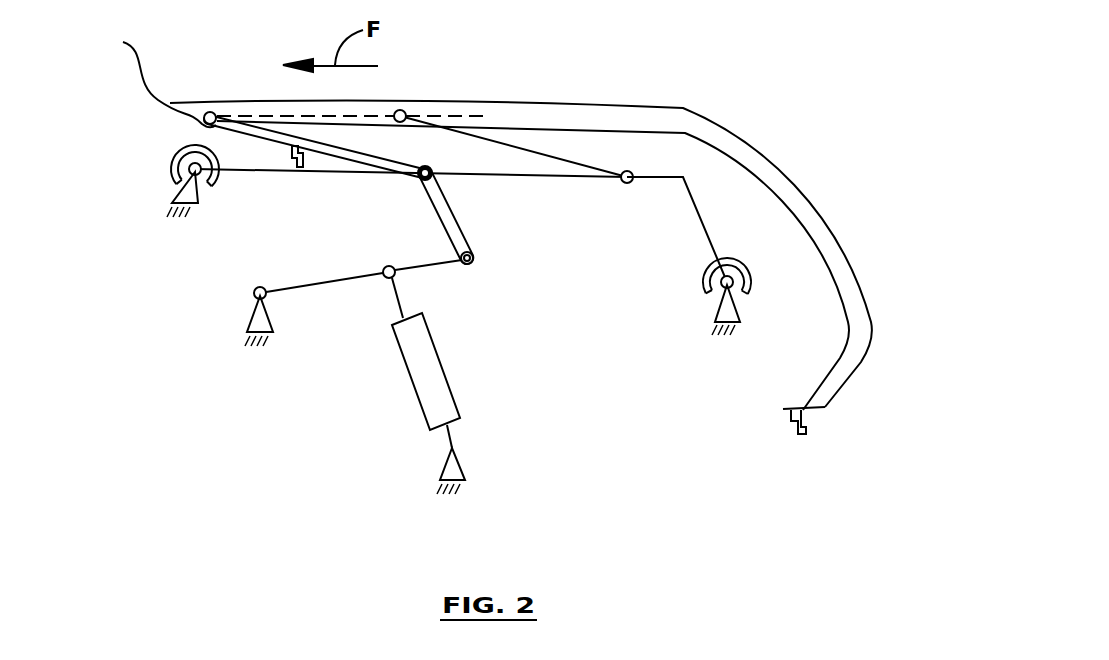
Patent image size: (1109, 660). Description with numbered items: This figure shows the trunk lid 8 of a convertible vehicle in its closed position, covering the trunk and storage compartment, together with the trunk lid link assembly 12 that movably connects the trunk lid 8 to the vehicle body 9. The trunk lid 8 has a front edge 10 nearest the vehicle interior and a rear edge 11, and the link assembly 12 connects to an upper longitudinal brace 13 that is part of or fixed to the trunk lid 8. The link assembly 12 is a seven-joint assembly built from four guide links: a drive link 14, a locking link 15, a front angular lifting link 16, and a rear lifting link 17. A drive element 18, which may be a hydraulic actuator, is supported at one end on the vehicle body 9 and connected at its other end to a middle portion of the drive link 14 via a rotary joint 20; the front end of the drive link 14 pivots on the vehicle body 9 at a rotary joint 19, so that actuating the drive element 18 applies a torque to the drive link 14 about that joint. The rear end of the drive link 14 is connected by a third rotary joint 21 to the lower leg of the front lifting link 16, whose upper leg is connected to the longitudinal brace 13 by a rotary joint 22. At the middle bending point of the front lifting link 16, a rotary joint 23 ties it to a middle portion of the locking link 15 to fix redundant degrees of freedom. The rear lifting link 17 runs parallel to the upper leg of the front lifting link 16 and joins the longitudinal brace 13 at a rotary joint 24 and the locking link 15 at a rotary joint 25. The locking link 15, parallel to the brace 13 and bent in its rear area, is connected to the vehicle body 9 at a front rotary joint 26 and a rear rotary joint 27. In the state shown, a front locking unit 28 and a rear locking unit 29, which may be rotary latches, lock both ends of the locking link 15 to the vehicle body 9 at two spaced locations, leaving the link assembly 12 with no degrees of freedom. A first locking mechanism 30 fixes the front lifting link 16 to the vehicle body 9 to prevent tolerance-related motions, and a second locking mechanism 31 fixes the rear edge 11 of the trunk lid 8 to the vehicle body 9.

The trunk lid 8 is at (482, 107).
The vehicle body 9 is at (172, 194).
The front edge 10 is at (160, 76).
The rear edge 11 is at (835, 396).
The trunk lid link assembly 12 is at (135, 126).
The upper longitudinal brace 13 is at (483, 116).
The drive link 14 is at (343, 278).
The locking link 15 is at (505, 178).
The front angular lifting link 16 is at (437, 218).
The rear lifting link 17 is at (560, 155).
The drive element 18 is at (428, 360).
The rotary joint 19 is at (255, 290).
The rotary joint 20 is at (397, 274).
The third rotary joint 21 is at (475, 258).
The rotary joint 22 is at (210, 111).
The rotary joint 23 is at (432, 168).
The rotary joint 24 is at (403, 110).
The rotary joint 25 is at (630, 183).
The front rotary joint 26 is at (200, 175).
The rear rotary joint 27 is at (740, 269).
The front locking unit 28 is at (172, 168).
The rear locking unit 29 is at (752, 292).
The first locking mechanism 30 is at (290, 155).
The second locking mechanism 31 is at (808, 430).